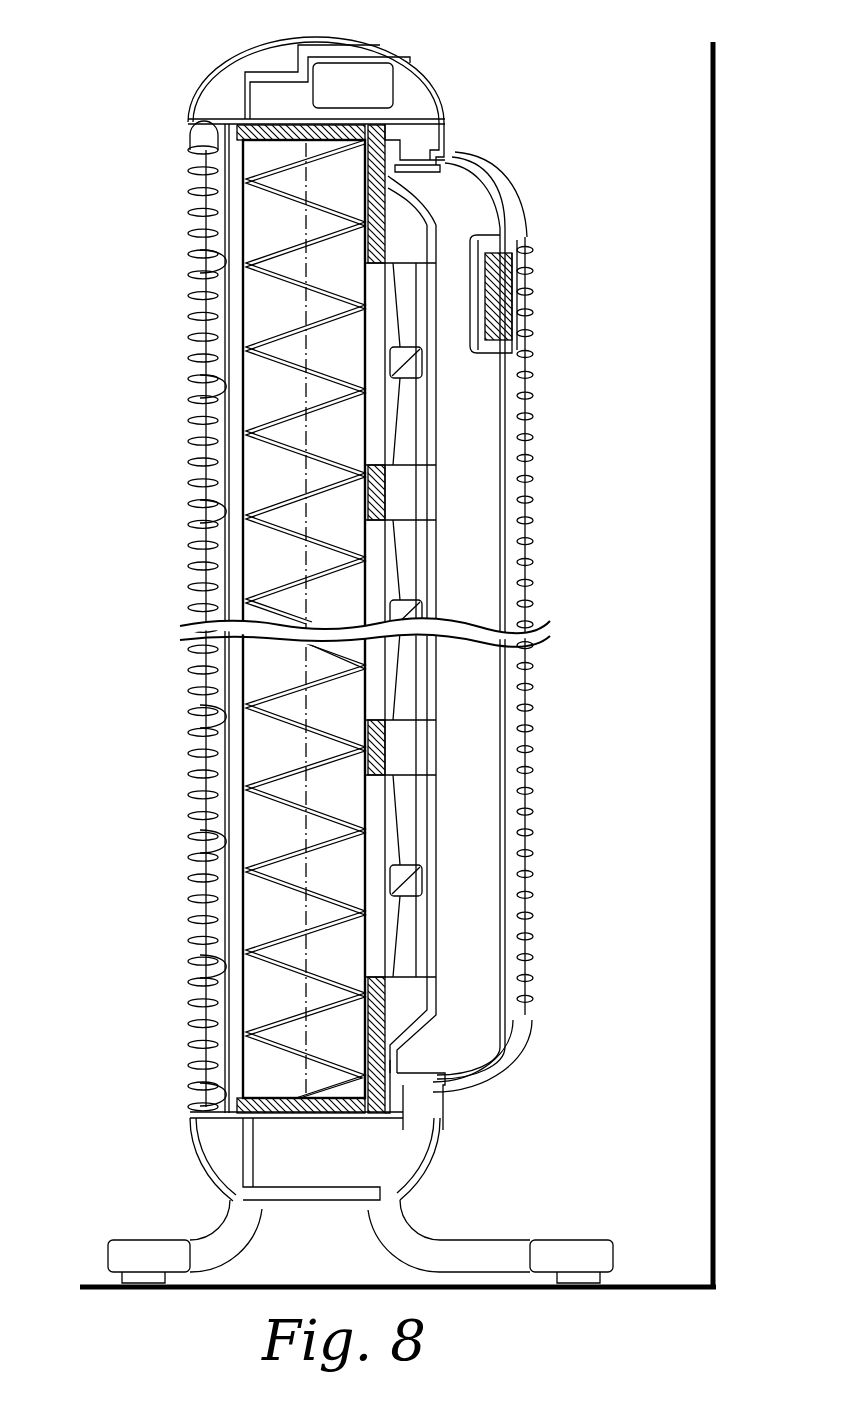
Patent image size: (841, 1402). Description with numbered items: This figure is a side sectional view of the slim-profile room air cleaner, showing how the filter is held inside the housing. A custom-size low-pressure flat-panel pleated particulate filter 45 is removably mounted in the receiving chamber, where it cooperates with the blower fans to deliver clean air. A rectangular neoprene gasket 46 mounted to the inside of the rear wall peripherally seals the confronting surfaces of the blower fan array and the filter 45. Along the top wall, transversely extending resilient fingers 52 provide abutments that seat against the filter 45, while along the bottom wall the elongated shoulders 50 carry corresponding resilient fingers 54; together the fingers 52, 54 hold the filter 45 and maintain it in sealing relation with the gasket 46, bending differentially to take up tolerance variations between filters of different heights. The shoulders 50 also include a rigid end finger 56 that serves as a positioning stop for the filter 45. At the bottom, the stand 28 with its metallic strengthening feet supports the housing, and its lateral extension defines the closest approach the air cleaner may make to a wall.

The stand 28 is at (433, 1223).
The flat-panel pleated particulate filter 45 is at (265, 242).
The gasket 46 is at (233, 147).
The elongated shoulders 50 is at (231, 1117).
The resilient fingers 52 is at (340, 132).
The resilient fingers 54 is at (292, 1115).
The rigid end finger 56 is at (235, 1090).